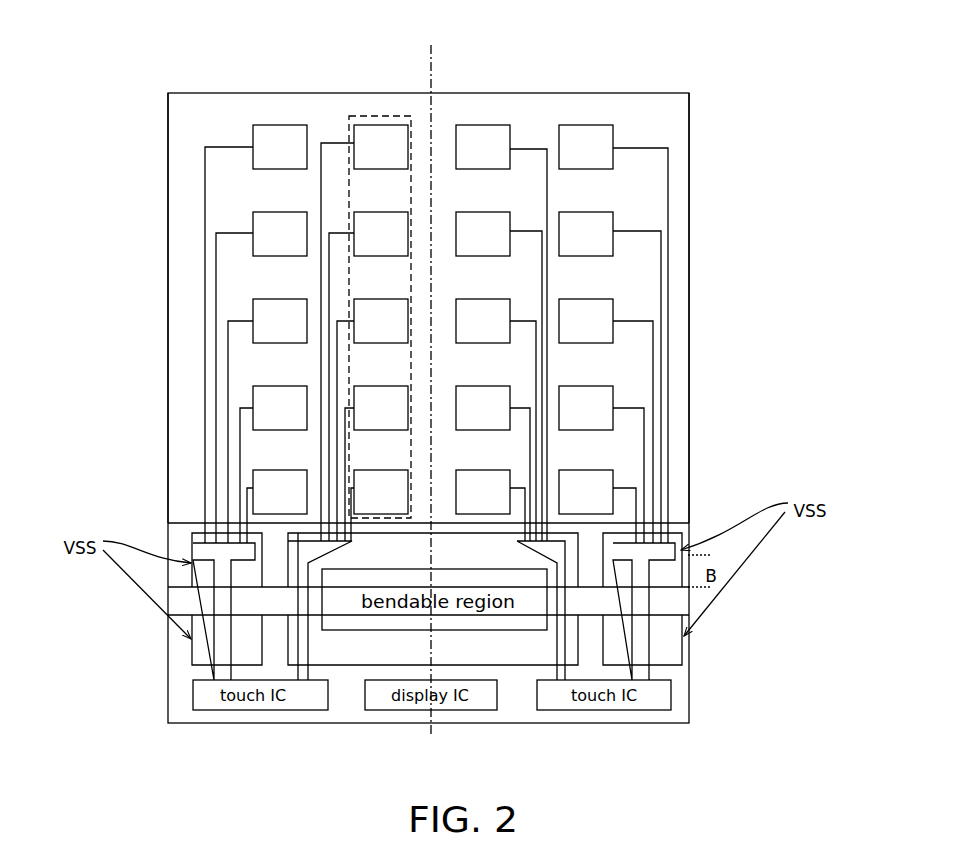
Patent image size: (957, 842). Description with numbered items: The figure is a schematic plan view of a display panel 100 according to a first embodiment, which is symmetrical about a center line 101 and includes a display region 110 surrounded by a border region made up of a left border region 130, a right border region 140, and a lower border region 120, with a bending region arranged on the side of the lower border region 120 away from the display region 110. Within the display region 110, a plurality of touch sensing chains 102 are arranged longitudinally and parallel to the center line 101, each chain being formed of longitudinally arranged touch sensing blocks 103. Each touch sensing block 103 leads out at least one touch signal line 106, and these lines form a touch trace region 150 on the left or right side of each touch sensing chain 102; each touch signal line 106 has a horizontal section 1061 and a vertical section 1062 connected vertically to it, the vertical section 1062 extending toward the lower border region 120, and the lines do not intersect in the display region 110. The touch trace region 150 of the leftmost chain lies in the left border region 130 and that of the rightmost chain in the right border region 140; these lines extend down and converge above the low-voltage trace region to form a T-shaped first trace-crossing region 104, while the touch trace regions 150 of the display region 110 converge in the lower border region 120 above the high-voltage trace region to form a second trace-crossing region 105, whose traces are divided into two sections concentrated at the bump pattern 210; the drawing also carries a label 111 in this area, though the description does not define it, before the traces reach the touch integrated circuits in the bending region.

The display panel 100 is at (508, 60).
The center line 101 is at (430, 78).
The touch sensing chain 102 is at (379, 116).
The touch sensing block 103 is at (375, 153).
The first trace-crossing region 104 is at (211, 551).
The second trace-crossing region 105 is at (306, 546).
The touch signal line 106 is at (748, 309).
The horizontal section 1061 is at (651, 148).
The vertical section 1062 is at (669, 194).
The display region 110 is at (546, 127).
The VDD power line 111 is at (547, 568).
The lower border region 120 is at (688, 524).
The left border region 130 is at (172, 303).
The right border region 140 is at (686, 307).
The touch trace region 150 is at (326, 214).
The bump pattern 210 is at (579, 581).